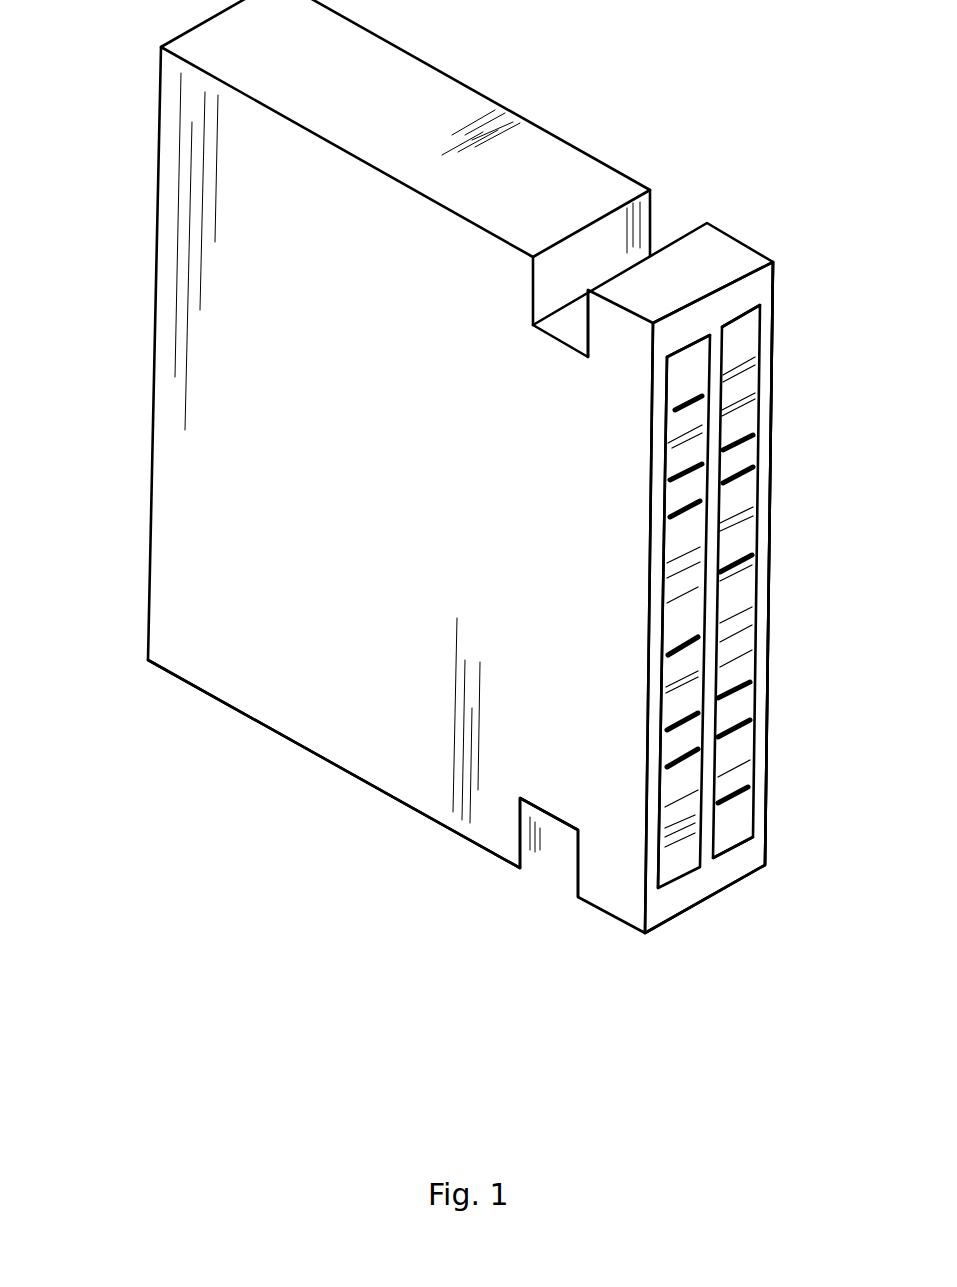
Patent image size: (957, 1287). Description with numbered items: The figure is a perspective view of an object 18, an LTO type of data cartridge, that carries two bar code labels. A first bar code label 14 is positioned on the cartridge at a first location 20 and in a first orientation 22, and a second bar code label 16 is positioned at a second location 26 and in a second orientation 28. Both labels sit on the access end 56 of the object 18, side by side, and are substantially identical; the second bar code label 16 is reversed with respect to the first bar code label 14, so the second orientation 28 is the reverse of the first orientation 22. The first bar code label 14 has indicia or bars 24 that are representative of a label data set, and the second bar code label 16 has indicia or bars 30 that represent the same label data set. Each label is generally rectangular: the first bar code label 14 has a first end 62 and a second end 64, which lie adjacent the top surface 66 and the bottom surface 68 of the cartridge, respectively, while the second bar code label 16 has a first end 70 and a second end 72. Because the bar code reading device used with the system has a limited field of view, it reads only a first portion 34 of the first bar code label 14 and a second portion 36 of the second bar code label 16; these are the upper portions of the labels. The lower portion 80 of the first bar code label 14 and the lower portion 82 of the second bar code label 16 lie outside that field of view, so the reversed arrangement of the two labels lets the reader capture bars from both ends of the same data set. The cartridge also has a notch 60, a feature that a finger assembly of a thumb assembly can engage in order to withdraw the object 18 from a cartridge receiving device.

The first bar code label 14 is at (663, 602).
The second bar code label 16 is at (760, 532).
The object 18 is at (158, 110).
The first location 20 is at (663, 465).
The first orientation 22 is at (660, 705).
The indicia or bars 24 is at (682, 473).
The second location 26 is at (763, 400).
The second orientation 28 is at (755, 701).
The indicia or bars 30 is at (740, 478).
The first portion 34 is at (663, 386).
The second portion 36 is at (762, 341).
The access end 56 is at (705, 883).
The notch 60 is at (543, 820).
The first end 62 is at (686, 342).
The second end 64 is at (675, 882).
The top surface 66 is at (536, 214).
The bottom surface 68 is at (318, 755).
The first end 70 is at (740, 843).
The second end 72 is at (742, 312).
The lower portion 80 is at (657, 805).
The lower portion 82 is at (753, 805).